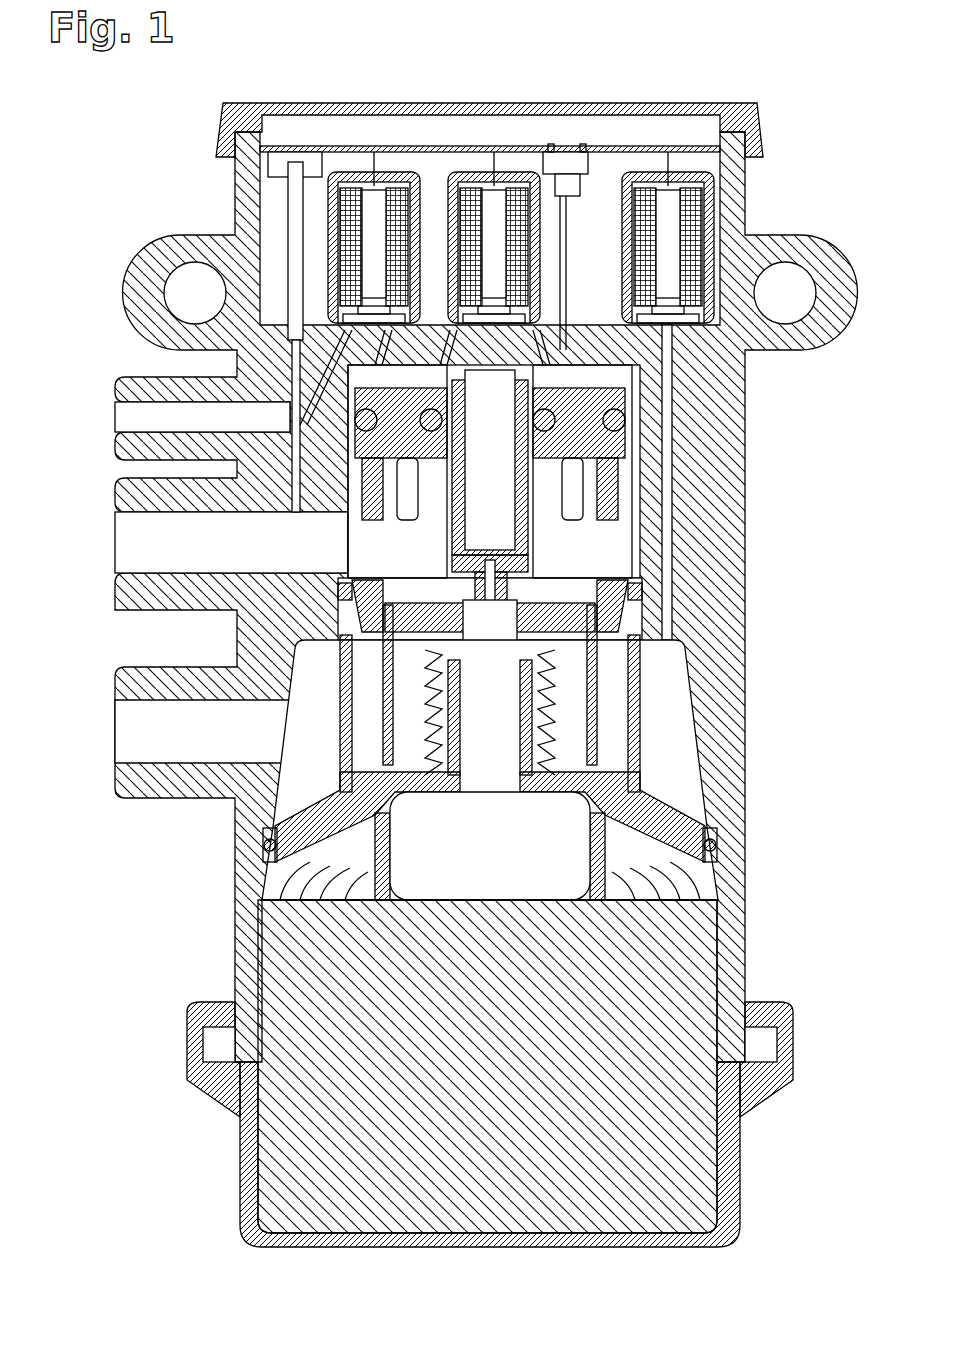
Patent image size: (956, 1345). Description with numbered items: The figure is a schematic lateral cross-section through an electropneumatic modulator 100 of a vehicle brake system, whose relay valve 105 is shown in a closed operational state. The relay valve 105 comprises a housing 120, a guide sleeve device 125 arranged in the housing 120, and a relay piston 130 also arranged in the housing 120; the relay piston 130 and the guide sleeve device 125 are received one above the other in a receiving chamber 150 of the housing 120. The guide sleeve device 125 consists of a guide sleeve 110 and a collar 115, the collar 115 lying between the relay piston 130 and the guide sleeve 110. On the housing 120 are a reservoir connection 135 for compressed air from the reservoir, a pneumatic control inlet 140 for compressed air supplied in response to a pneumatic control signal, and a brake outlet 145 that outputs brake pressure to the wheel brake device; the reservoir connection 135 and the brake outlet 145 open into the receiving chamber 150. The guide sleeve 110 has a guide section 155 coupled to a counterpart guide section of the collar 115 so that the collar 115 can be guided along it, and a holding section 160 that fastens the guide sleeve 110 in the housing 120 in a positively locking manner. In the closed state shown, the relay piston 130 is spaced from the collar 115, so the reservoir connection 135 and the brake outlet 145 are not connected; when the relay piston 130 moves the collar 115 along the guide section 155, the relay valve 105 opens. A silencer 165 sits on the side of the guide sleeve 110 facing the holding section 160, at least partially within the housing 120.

The electropneumatic modulator 100 is at (172, 130).
The relay valve 105 is at (347, 368).
The guide sleeve 110 is at (600, 765).
The collar 115 is at (580, 620).
The housing 120 is at (720, 543).
The guide sleeve device 125 is at (340, 598).
The relay piston 130 is at (600, 400).
The reservoir connection 135 is at (130, 737).
The pneumatic control inlet 140 is at (130, 418).
The brake outlet 145 is at (130, 549).
The receiving chamber 150 is at (603, 542).
The guide section 155 is at (600, 712).
The holding section 160 is at (730, 902).
The silencer 165 is at (695, 1192).